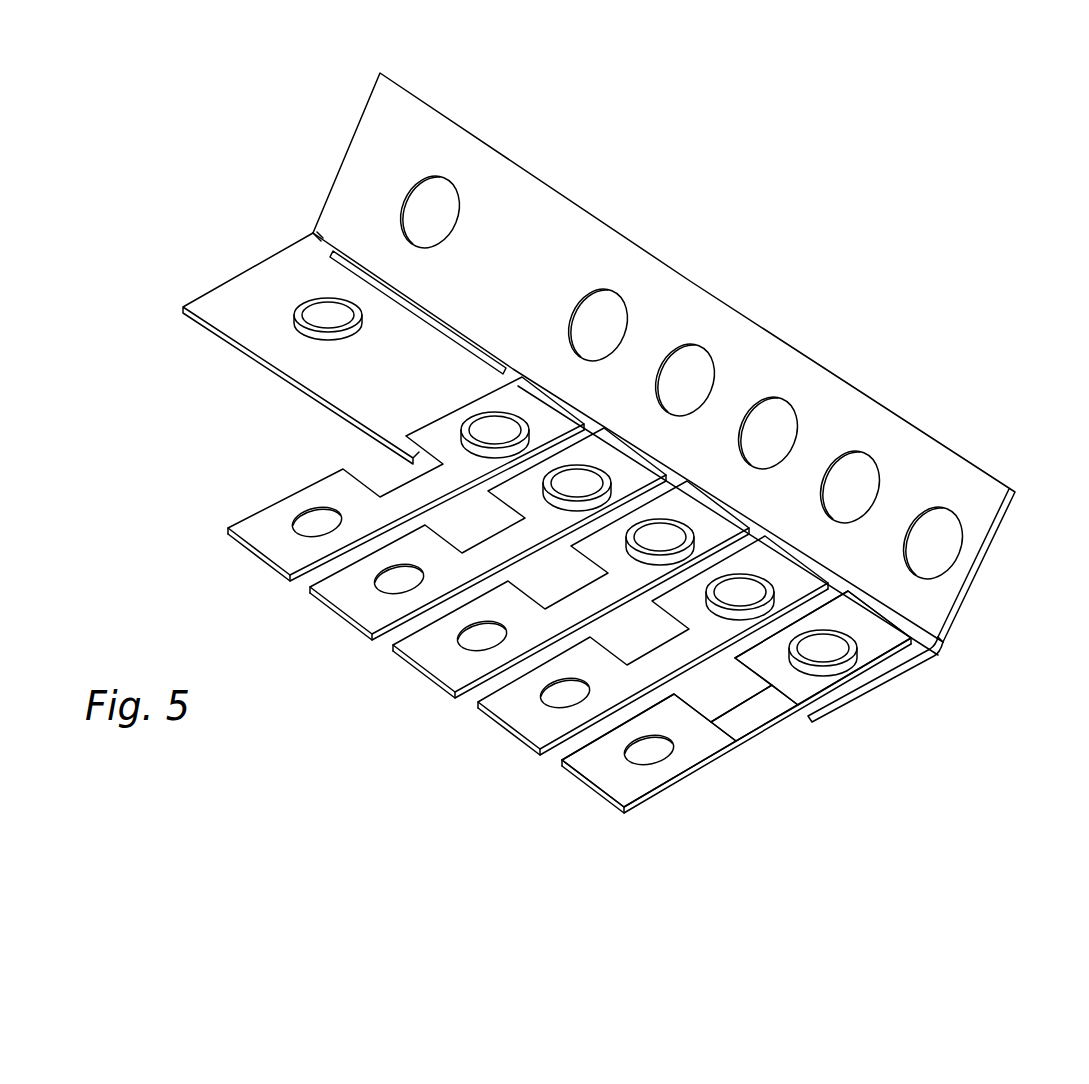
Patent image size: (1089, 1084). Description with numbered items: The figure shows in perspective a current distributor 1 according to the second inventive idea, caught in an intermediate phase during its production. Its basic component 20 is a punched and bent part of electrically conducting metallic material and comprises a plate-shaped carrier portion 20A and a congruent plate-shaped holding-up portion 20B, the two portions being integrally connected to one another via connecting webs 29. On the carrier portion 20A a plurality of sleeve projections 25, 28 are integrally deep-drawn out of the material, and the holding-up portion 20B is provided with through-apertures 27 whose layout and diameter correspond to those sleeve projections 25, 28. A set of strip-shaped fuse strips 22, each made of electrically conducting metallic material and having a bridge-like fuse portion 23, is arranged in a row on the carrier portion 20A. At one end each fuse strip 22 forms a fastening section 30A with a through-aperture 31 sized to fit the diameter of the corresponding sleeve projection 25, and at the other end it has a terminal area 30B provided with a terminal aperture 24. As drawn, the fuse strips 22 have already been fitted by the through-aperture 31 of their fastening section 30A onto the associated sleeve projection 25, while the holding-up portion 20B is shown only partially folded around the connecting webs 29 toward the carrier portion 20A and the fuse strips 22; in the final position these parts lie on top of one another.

The current distributor 1 is at (457, 713).
The basic component 20 is at (735, 375).
The carrier portion 20A is at (373, 388).
The holding-up portion 20B is at (510, 260).
The fuse strip 22 is at (703, 738).
The fuse portion 23 is at (740, 700).
The terminal aperture 24 is at (648, 752).
The sleeve projection 25 is at (910, 673).
The through-aperture 27 is at (938, 538).
The sleeve projection 28 is at (303, 330).
The connecting web 29 is at (313, 227).
The fastening section 30A is at (792, 682).
The terminal area 30B is at (610, 765).
The through-aperture 31 is at (873, 692).